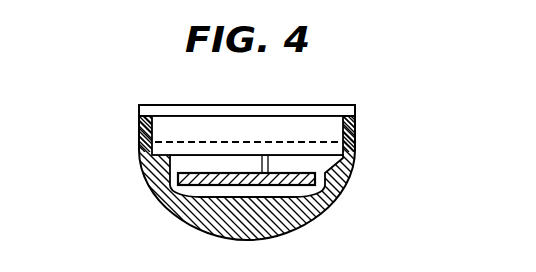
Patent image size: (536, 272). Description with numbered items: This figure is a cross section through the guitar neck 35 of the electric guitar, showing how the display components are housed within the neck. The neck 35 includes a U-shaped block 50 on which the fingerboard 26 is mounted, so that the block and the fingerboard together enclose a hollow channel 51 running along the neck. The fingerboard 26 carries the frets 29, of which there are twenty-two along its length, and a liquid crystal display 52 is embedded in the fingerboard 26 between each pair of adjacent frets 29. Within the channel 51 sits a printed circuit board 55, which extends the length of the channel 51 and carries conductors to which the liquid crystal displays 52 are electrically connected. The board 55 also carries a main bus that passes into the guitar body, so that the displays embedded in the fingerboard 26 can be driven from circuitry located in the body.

The fingerboard 26 is at (138, 131).
The frets 29 is at (297, 108).
The neck 35 is at (321, 222).
The U-shaped block 50 is at (177, 223).
The hollow channel 51 is at (318, 166).
The liquid crystal display 52 is at (328, 133).
The printed circuit board 55 is at (160, 184).